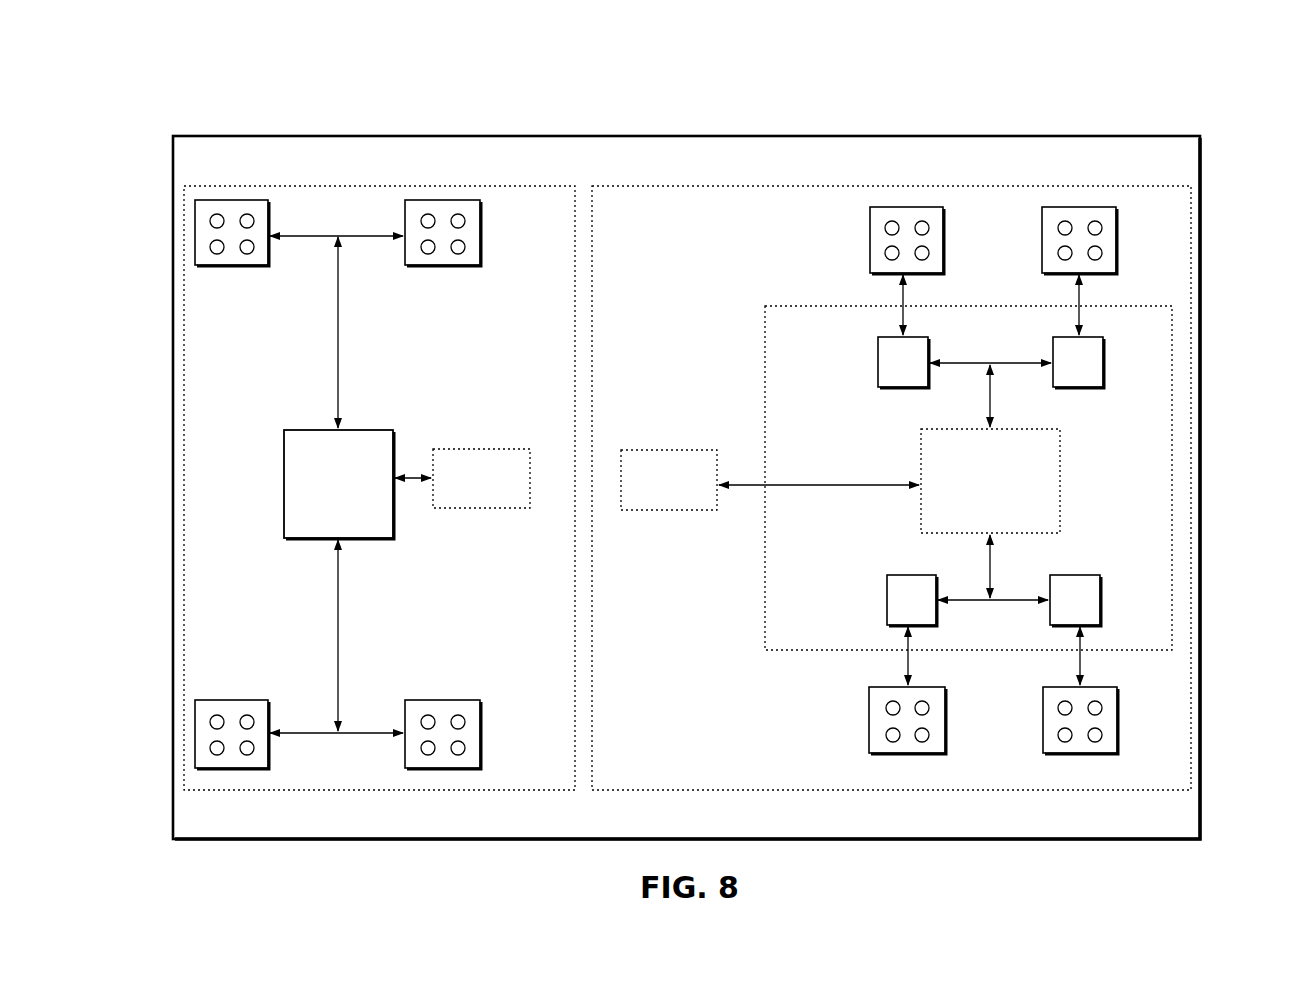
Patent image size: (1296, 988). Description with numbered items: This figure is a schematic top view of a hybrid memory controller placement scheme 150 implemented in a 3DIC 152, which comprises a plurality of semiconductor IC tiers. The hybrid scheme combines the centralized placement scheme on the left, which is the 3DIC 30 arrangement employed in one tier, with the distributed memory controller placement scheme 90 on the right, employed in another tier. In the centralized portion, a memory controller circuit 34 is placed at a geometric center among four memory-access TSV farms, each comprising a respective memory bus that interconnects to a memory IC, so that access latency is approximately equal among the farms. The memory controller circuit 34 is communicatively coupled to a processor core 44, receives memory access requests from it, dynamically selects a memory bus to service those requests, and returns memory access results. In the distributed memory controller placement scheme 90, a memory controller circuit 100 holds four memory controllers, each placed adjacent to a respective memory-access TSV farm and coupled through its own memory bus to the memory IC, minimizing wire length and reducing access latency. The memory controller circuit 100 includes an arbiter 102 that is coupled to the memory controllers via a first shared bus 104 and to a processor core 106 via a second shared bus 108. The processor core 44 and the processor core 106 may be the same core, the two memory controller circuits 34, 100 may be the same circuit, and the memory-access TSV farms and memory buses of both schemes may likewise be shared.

The hybrid memory controller placement scheme 150 is at (224, 112).
The 3DIC 152 is at (619, 136).
The 3DIC 30 is at (344, 541).
The memory controller circuit 34 is at (369, 430).
The processor core 44 is at (470, 449).
The distributed memory controller placement scheme 90 is at (923, 541).
The memory controller circuit 100 is at (791, 306).
The arbiter 102 is at (1062, 481).
The first shared bus 104 is at (980, 363).
The processor core 106 is at (658, 450).
The second shared bus 108 is at (828, 485).